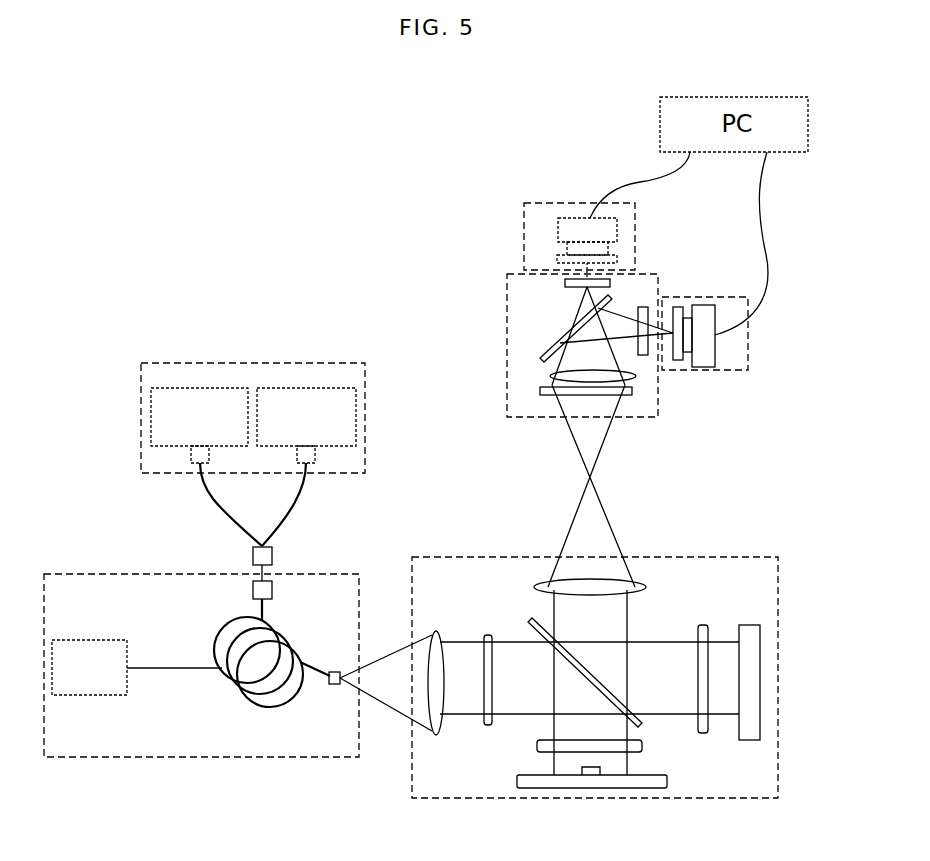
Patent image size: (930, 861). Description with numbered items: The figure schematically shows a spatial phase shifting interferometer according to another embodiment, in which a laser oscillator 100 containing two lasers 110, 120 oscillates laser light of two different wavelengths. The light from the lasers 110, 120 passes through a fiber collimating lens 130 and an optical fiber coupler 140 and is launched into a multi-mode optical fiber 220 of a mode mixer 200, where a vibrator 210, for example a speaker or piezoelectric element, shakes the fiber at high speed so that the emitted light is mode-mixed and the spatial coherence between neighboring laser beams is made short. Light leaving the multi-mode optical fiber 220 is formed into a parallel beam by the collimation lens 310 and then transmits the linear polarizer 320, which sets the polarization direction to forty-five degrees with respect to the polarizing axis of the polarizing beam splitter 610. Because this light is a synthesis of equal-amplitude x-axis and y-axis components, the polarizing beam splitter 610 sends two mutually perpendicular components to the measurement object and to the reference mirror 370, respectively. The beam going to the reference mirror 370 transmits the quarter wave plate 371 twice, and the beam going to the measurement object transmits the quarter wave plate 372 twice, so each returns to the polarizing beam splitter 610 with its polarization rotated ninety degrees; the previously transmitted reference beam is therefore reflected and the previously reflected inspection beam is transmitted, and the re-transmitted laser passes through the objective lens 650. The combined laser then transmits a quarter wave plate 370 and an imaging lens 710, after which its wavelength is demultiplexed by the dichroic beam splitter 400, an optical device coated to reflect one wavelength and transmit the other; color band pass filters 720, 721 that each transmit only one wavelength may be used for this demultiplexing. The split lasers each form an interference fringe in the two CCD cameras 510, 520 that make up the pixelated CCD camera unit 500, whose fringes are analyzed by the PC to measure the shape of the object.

The laser oscillator 100 is at (296, 363).
The laser 110 is at (226, 388).
The laser 120 is at (330, 388).
The fiber collimating lens 130 is at (191, 452).
The optical fiber coupler 140 is at (253, 556).
The mode mixer 200 is at (63, 574).
The vibrator 210 is at (113, 640).
The multi-mode optical fiber 220 is at (273, 622).
The collimation lens 310 is at (436, 630).
The linear polarizer 320 is at (489, 635).
The reference mirror 370 is at (760, 680).
The quarter wave plate 371 is at (706, 738).
The quarter wave plate 372 is at (537, 746).
The dichroic beam splitter 400 is at (546, 350).
The pixelated CCD camera unit 500 is at (636, 244).
The CCD camera 510 is at (558, 228).
The CCD camera 520 is at (716, 357).
The polarizing beam splitter 610 is at (640, 718).
The objective lens 650 is at (632, 585).
The imaging lens 710 is at (648, 352).
The color band pass filter 720 is at (565, 283).
The color band pass filter 721 is at (550, 376).